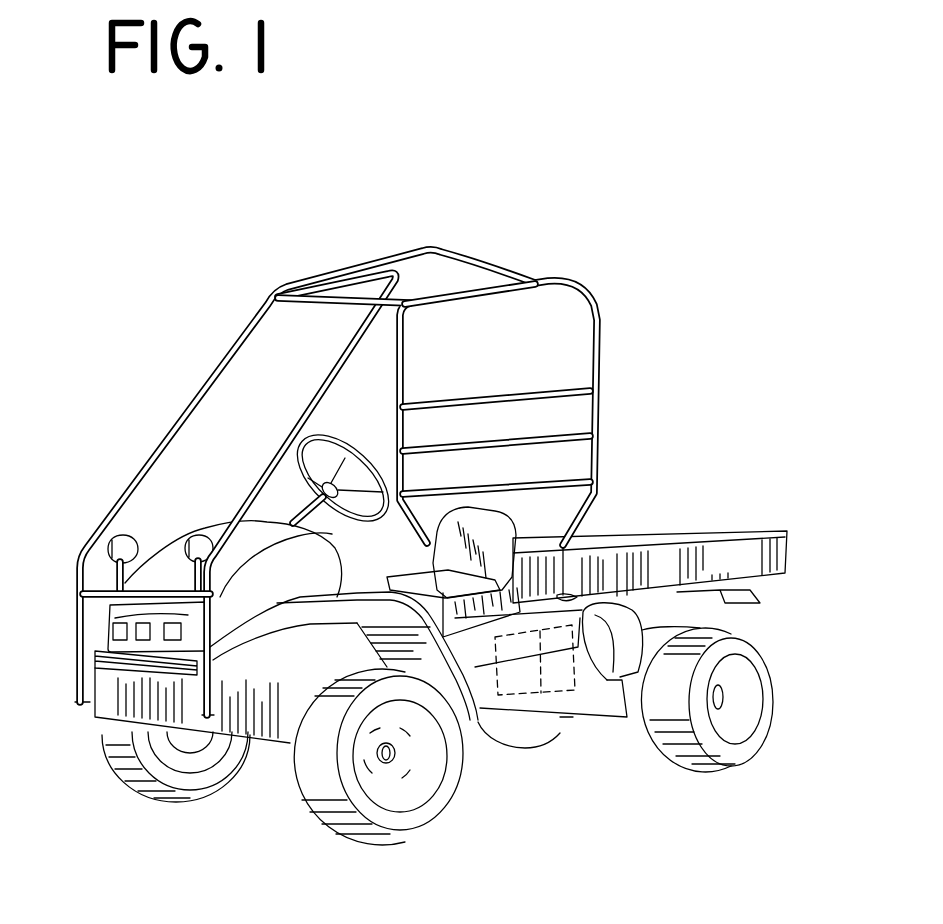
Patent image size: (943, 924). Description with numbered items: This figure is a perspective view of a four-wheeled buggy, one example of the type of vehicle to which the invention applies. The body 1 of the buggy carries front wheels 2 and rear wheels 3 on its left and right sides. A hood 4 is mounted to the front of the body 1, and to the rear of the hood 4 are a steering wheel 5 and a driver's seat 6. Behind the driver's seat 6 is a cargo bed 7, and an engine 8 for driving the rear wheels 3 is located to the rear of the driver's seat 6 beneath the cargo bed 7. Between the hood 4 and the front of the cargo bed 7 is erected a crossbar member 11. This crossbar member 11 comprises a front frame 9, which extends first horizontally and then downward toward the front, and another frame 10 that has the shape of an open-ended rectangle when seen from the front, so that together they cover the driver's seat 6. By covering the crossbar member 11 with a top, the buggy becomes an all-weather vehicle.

The body 1 is at (255, 740).
The front wheels 2 is at (153, 775).
The rear wheels 3 is at (700, 752).
The hood 4 is at (163, 570).
The steering wheel 5 is at (317, 437).
The driver's seat 6 is at (490, 513).
The cargo bed 7 is at (762, 553).
The engine 8 is at (560, 678).
The front frame 9 is at (490, 263).
The frame 10 is at (598, 373).
The crossbar member 11 is at (665, 267).